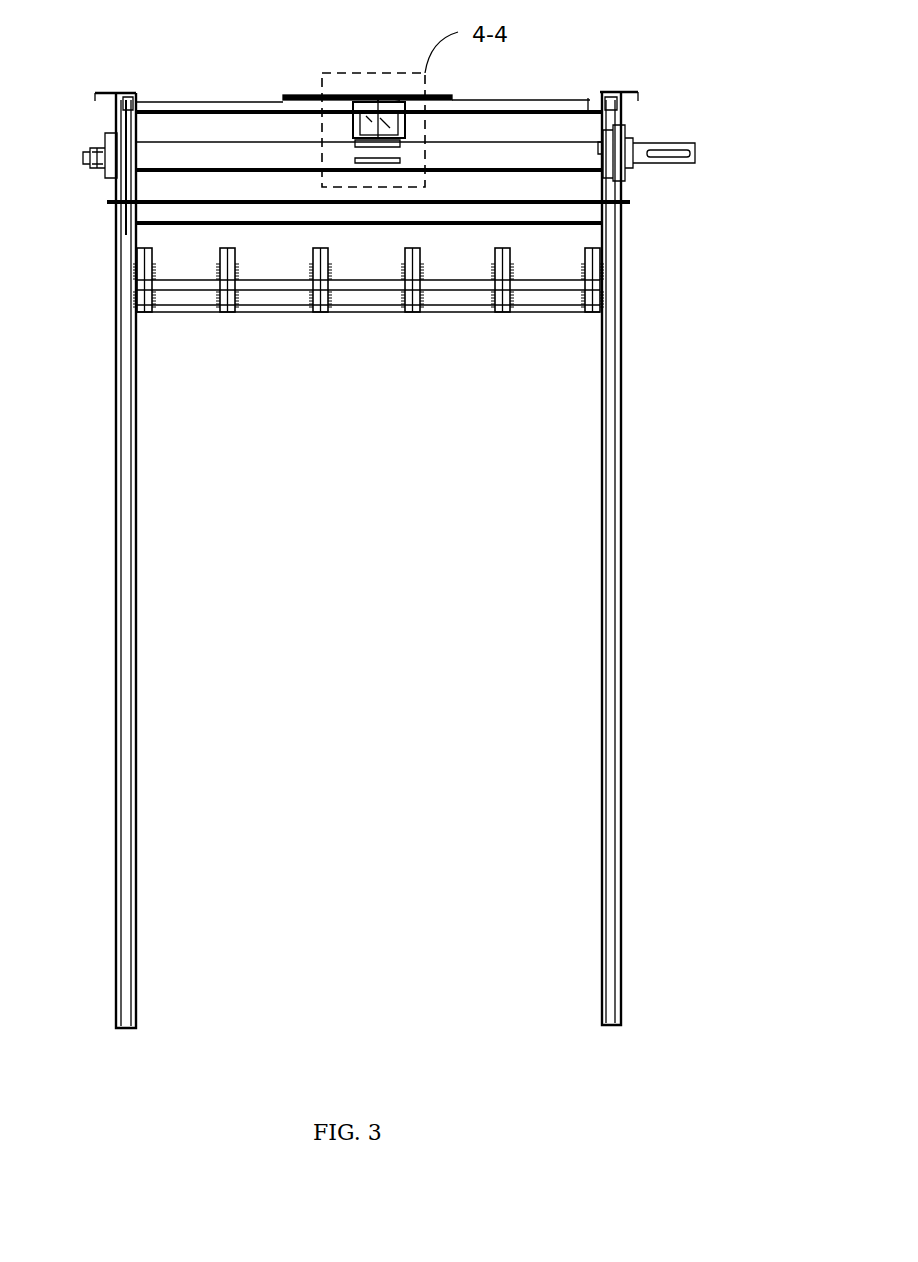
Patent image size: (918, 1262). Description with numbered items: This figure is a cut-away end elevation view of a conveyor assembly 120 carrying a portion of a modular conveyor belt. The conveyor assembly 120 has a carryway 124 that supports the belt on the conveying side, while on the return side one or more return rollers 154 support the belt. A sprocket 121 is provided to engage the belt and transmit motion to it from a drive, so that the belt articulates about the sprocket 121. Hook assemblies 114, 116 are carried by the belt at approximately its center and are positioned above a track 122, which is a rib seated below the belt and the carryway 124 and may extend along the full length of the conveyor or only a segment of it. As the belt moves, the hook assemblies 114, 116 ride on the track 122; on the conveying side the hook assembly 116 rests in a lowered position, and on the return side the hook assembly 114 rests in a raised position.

The hook assembly 114 is at (371, 92).
The hook assembly 116 is at (448, 100).
The conveyor assembly 120 is at (724, 337).
The sprocket 121 is at (636, 140).
The track 122 is at (355, 138).
The carryway 124 is at (173, 110).
The return roller 154 is at (214, 312).